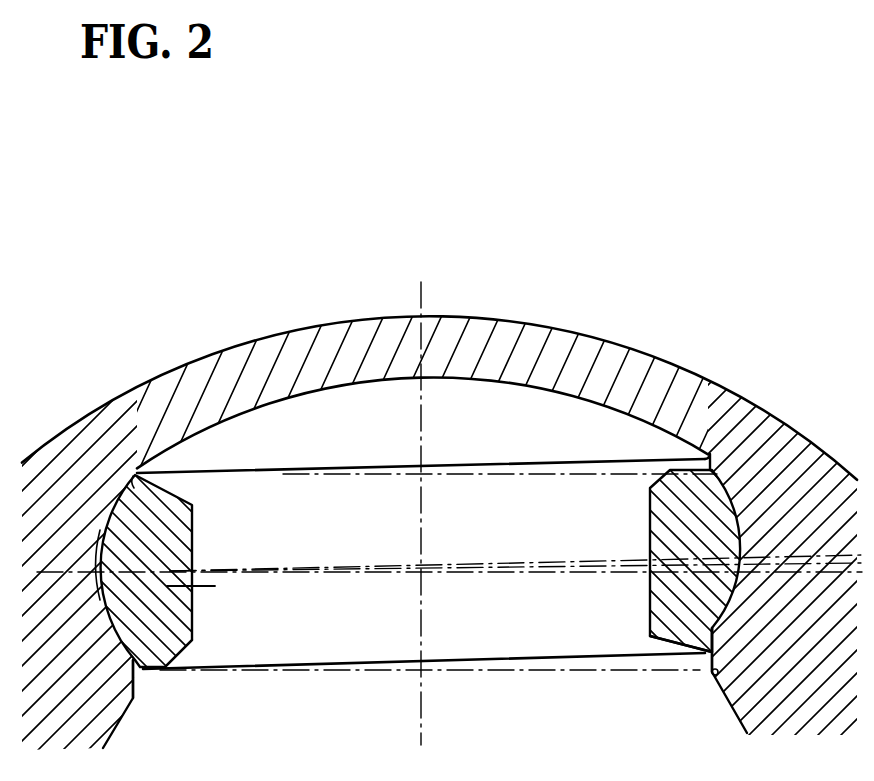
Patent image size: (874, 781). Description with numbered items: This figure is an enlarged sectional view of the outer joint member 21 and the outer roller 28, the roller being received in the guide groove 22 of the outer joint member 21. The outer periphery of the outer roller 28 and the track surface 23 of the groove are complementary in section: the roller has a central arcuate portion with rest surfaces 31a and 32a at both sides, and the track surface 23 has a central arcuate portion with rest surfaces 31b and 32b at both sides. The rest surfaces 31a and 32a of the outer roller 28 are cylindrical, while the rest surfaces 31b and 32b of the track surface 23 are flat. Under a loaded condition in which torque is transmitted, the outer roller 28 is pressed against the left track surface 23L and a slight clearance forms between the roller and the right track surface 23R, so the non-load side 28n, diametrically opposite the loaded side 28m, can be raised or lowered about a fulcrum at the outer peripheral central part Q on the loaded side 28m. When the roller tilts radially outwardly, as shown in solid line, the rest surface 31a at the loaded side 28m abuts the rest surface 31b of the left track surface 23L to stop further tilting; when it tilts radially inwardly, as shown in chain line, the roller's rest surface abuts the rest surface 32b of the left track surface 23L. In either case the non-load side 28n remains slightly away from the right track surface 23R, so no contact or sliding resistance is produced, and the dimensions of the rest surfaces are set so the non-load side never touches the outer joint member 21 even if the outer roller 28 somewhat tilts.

The outer joint member 21 is at (476, 318).
The guide groove 22 is at (510, 400).
The track surface 23 is at (38, 645).
The left track surface 23L is at (37, 672).
The right track surface 23R is at (747, 585).
The outer roller 28 is at (443, 654).
The loaded side 28m is at (190, 642).
The non-load side 28n is at (650, 618).
The rest surface 31a is at (178, 470).
The rest surface 31b is at (132, 487).
The rest surface 32a is at (135, 661).
The rest surface 32b is at (133, 665).
The outer peripheral central part Q is at (100, 565).